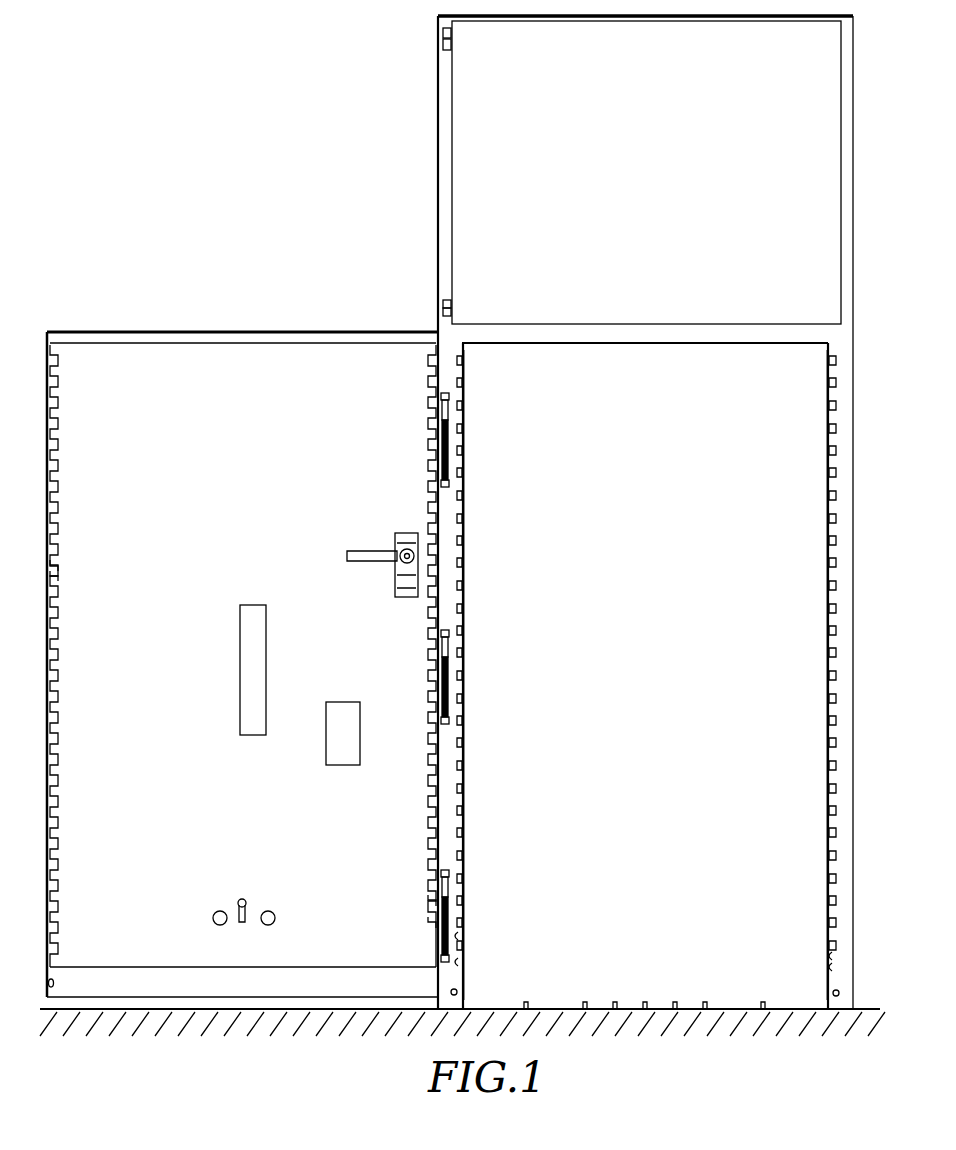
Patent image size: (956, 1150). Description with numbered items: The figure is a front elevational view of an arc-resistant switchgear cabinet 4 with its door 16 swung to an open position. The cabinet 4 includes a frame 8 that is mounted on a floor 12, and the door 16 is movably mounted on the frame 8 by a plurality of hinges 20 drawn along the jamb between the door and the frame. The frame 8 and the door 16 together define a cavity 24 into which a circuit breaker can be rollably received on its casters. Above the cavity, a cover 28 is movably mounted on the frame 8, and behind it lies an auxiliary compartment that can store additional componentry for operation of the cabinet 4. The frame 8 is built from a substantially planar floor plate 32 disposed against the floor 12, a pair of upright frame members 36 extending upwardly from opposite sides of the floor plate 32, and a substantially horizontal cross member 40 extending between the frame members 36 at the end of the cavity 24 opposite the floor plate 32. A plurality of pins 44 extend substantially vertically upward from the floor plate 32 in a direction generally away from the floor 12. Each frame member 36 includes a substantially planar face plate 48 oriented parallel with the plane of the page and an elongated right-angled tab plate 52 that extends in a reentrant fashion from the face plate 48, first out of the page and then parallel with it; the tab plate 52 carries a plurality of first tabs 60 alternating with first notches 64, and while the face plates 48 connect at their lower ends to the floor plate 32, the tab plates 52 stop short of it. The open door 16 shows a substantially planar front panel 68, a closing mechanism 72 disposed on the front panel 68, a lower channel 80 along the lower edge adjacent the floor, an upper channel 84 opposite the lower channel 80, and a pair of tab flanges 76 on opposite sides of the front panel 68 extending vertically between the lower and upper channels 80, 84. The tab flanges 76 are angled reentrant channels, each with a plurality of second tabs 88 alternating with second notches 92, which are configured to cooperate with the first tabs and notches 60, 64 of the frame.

The cabinet 4 is at (268, 192).
The frame 8 is at (470, 351).
The floor 12 is at (866, 1010).
The door 16 is at (90, 325).
The hinges 20 is at (456, 490).
The cavity 24 is at (646, 640).
The cover 28 is at (842, 256).
The floor plate 32 is at (548, 1008).
The upright frame members 36 is at (470, 574).
The cross member 40 is at (683, 347).
The pins 44 is at (650, 1003).
The face plate 48 is at (446, 352).
The tab plate 52 is at (470, 428).
The first tabs 60 is at (458, 966).
The first notches 64 is at (455, 935).
The front panel 68 is at (232, 464).
The closing mechanism 72 is at (400, 530).
The tab flanges 76 is at (62, 496).
The lower channel 80 is at (93, 965).
The upper channel 84 is at (259, 346).
The second tabs 88 is at (58, 569).
The second notches 92 is at (58, 576).